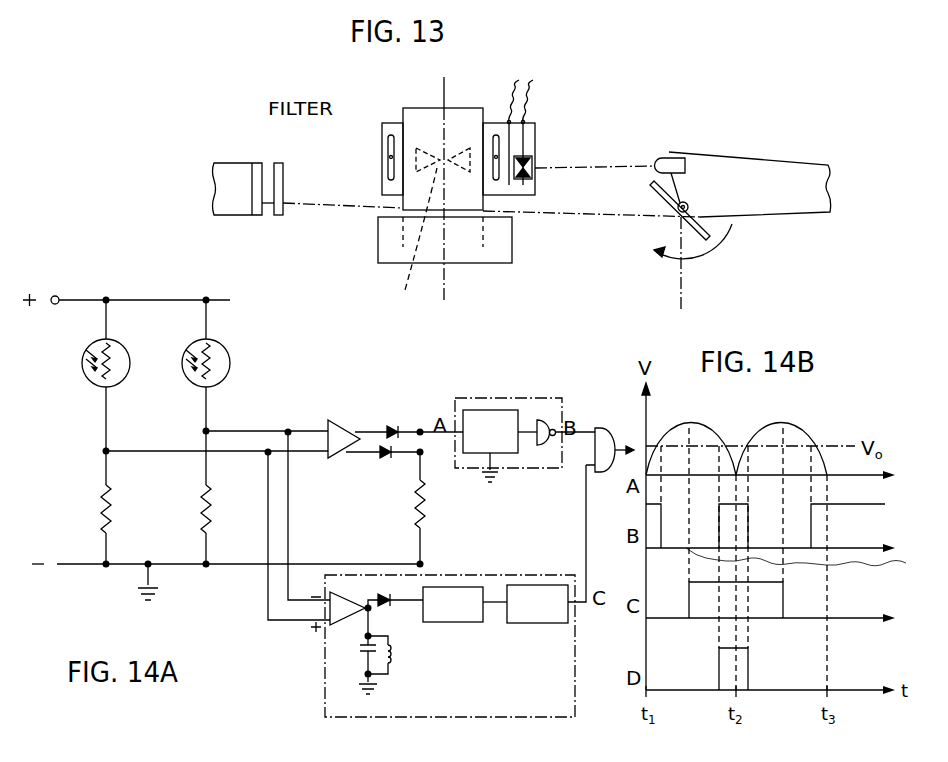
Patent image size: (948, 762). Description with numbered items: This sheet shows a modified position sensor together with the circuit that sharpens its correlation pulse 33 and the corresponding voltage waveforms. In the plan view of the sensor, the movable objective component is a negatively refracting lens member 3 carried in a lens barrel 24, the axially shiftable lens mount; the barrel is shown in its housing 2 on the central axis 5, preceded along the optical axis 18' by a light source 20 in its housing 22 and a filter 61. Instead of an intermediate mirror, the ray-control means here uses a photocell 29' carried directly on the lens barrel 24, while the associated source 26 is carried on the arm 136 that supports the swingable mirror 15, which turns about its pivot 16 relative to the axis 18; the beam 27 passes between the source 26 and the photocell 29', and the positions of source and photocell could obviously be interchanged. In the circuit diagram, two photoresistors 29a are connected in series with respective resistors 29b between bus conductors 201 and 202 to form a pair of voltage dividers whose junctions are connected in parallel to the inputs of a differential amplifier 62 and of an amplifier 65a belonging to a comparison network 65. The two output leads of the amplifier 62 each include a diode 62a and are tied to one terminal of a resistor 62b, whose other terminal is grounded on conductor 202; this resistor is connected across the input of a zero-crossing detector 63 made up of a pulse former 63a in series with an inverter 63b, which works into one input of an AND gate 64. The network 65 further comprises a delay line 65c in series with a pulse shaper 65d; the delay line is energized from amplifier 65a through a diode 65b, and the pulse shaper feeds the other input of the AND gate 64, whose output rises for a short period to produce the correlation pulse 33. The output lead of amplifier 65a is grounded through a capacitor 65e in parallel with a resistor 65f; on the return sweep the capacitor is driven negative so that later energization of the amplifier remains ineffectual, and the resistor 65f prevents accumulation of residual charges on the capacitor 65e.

In FIG. 13, the housing base 2 is at (482, 272).
In FIG. 13, the negatively refracting lens member 3 is at (405, 290).
In FIG. 13, the central axis 5 is at (447, 290).
In FIG. 13, the swingable mirror 15 is at (711, 240).
In FIG. 13, the pivot 16 is at (688, 203).
In FIG. 13, the reference axis 18 is at (664, 264).
In FIG. 13, the optical axis 18' is at (491, 195).
In FIG. 13, the light source 20 is at (258, 163).
In FIG. 13, the lamp housing 22 is at (221, 165).
In FIG. 13, the lens barrel 24 is at (408, 120).
In FIG. 13, the source 26 is at (661, 158).
In FIG. 13, the light beam 27 is at (585, 168).
In FIG. 13, the photocell 29' is at (543, 132).
In FIG. 13, the filter 61 is at (279, 163).
In FIG. 13, the arm 136 is at (798, 166).
In FIG. 14A, the bus conductor 201 is at (70, 300).
In FIG. 14A, the bus conductor 202 is at (64, 566).
In FIG. 14A, the photoresistors 29a is at (182, 352).
In FIG. 14A, the resistors 29b is at (202, 518).
In FIG. 14A, the differential amplifier 62 is at (344, 430).
In FIG. 14A, the diodes 62a is at (380, 453).
In FIG. 14A, the resistor 62b is at (427, 513).
In FIG. 14A, the zero-crossing detector 63 is at (556, 470).
In FIG. 14A, the pulse former 63a is at (487, 410).
In FIG. 14A, the inverter 63b is at (548, 420).
In FIG. 14A, the AND gate 64 is at (600, 430).
In FIG. 14A, the comparison network 65 is at (577, 641).
In FIG. 14A, the amplifier 65a is at (344, 618).
In FIG. 14A, the diode 65b is at (395, 615).
In FIG. 14A, the delay line 65c is at (464, 622).
In FIG. 14A, the pulse shaper 65d is at (538, 623).
In FIG. 14A, the capacitor 65e is at (363, 650).
In FIG. 14A, the resistor 65f is at (392, 657).
In FIG. 14B, the correlation pulse 33 is at (743, 669).